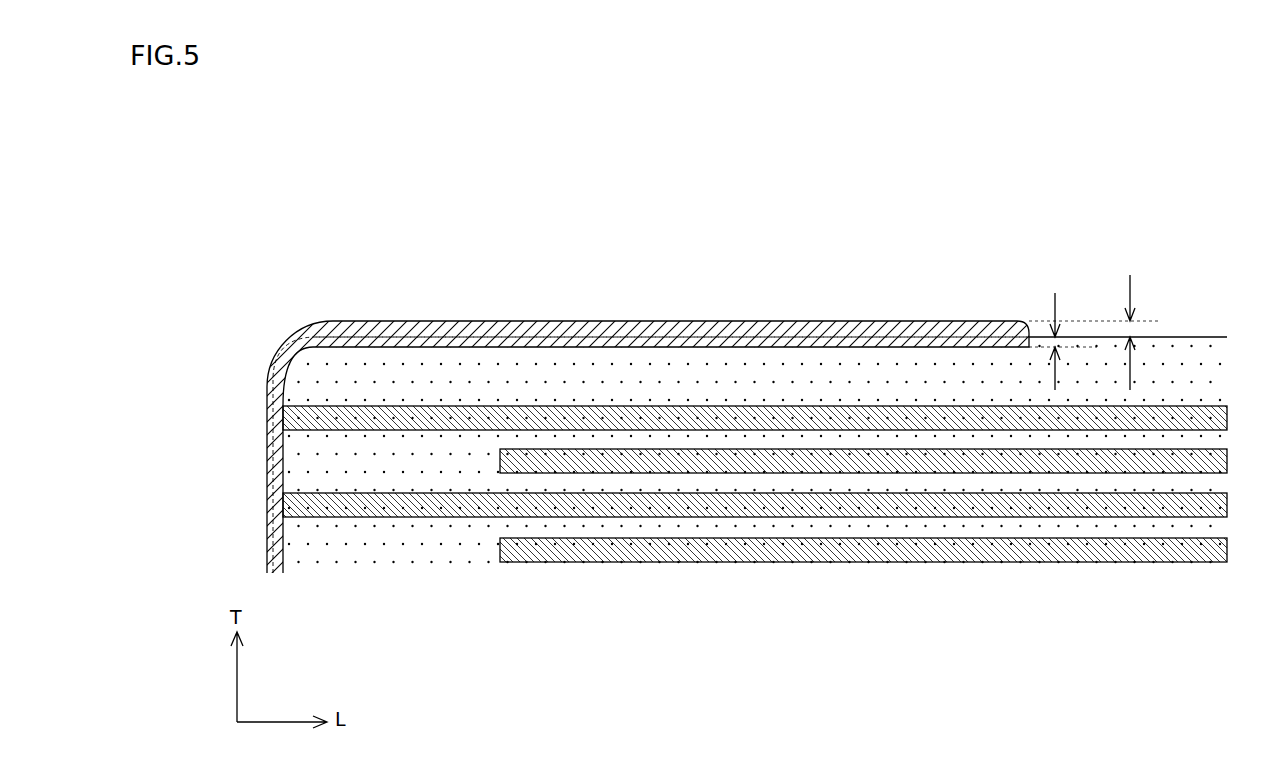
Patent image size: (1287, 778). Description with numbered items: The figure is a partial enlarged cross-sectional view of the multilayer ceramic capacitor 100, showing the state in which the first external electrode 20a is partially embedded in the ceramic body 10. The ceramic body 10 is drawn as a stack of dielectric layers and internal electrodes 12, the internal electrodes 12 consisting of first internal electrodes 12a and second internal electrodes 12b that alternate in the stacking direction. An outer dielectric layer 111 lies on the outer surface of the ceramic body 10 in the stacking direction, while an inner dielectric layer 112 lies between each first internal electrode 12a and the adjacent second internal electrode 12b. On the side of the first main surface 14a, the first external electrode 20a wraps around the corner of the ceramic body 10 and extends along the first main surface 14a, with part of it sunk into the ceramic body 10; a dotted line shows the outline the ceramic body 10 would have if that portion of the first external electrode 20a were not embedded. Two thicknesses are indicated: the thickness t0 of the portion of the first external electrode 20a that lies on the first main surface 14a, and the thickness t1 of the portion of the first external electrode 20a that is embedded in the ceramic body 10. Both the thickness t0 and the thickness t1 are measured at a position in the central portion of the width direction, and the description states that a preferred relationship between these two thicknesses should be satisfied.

The multilayer ceramic capacitor 100 is at (767, 382).
The ceramic body 10 is at (770, 412).
The first main surface 14a is at (1215, 337).
The outer dielectric layer 111 is at (575, 370).
The inner dielectric layer 112 is at (657, 477).
The internal electrodes 12 is at (752, 393).
The first internal electrode 12a is at (420, 493).
The second internal electrode 12b is at (885, 537).
The first external electrode 20a is at (458, 321).
The thickness of embedded portion of first external electrode t1 is at (1030, 337).
The thickness of portion of first external electrode on first main surface t0 is at (1133, 330).